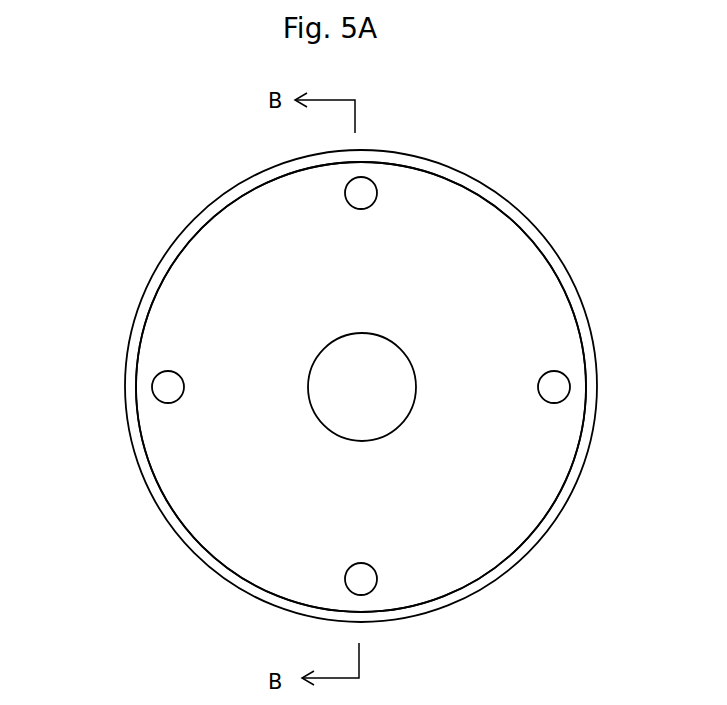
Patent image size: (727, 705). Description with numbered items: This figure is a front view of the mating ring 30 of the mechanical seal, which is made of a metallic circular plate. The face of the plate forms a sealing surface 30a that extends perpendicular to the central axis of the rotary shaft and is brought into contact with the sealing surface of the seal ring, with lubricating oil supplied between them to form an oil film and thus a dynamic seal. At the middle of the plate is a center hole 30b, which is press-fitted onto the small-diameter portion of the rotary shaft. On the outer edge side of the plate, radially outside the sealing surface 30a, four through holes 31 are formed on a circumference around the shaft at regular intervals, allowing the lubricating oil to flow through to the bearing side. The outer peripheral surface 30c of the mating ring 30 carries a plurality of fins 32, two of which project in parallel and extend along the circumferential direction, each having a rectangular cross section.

The mating ring 30 is at (113, 164).
The sealing surface 30a is at (321, 458).
The center hole 30b is at (390, 342).
The outer peripheral surface 30c is at (151, 278).
The through holes 31 is at (372, 190).
The fins 32 is at (553, 255).